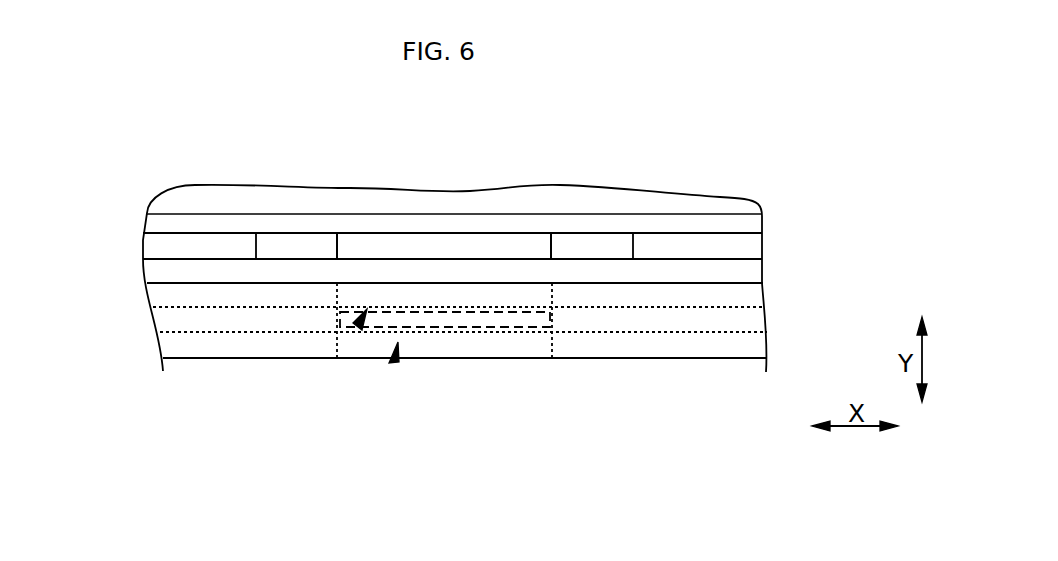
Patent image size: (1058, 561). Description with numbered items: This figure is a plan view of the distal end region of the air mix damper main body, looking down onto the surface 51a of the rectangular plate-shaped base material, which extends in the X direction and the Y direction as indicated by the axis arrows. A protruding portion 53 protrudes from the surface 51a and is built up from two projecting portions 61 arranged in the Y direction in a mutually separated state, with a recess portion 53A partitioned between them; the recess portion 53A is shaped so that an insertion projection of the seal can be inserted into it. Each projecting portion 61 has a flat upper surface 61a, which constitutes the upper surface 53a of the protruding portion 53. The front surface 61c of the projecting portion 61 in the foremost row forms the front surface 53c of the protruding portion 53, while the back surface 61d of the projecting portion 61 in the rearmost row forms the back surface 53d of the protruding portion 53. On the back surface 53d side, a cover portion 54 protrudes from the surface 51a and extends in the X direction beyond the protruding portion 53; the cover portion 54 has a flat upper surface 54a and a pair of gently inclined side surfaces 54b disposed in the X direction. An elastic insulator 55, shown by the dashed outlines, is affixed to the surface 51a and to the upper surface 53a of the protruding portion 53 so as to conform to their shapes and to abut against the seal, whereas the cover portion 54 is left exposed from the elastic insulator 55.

The surface 51a is at (197, 248).
The protruding portion 53 is at (498, 323).
The upper surface of the protruding portion 53a is at (467, 369).
The recess portion 53A is at (558, 323).
The front surface of the protruding portion 53c is at (465, 450).
The back surface of the protruding portion 53d is at (455, 194).
The cover portion 54 is at (416, 181).
The upper surface of the cover portion 54a is at (442, 247).
The side surfaces of the cover portion 54b is at (277, 247).
The elastic insulator 55 is at (748, 320).
The projecting portion 61 is at (358, 326).
The upper surface of the projecting portion 61a is at (495, 298).
The front surface of the projecting portion 61c is at (451, 358).
The back surface of the projecting portion 61d is at (387, 285).